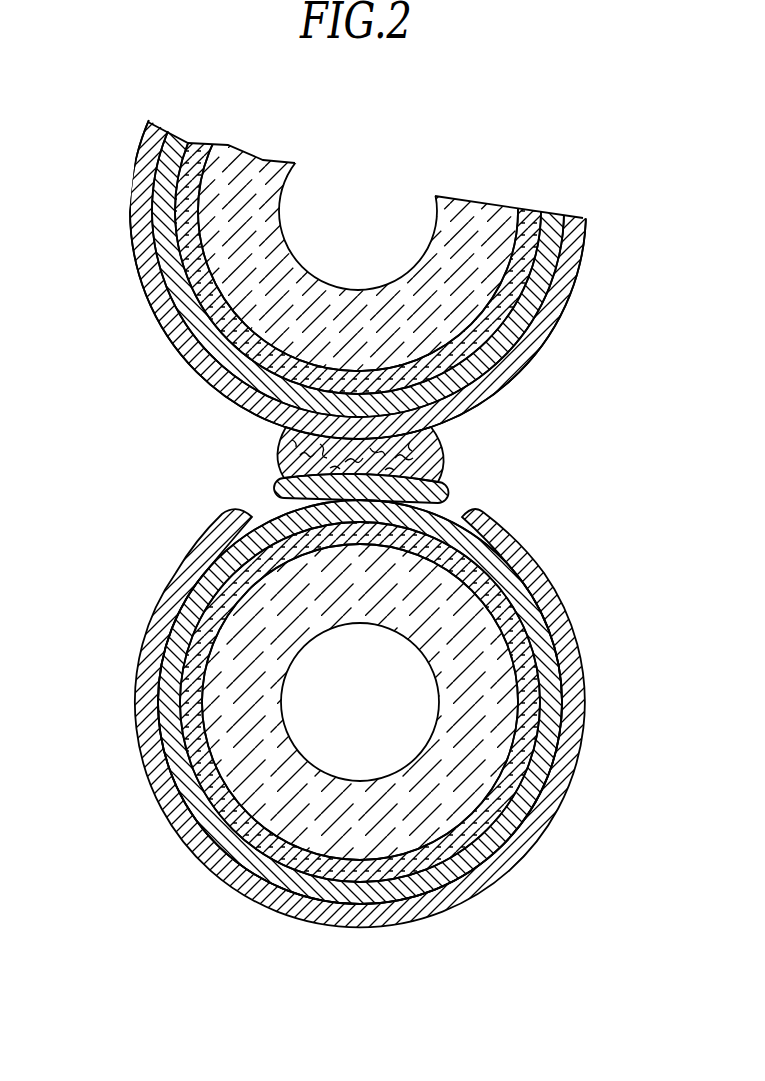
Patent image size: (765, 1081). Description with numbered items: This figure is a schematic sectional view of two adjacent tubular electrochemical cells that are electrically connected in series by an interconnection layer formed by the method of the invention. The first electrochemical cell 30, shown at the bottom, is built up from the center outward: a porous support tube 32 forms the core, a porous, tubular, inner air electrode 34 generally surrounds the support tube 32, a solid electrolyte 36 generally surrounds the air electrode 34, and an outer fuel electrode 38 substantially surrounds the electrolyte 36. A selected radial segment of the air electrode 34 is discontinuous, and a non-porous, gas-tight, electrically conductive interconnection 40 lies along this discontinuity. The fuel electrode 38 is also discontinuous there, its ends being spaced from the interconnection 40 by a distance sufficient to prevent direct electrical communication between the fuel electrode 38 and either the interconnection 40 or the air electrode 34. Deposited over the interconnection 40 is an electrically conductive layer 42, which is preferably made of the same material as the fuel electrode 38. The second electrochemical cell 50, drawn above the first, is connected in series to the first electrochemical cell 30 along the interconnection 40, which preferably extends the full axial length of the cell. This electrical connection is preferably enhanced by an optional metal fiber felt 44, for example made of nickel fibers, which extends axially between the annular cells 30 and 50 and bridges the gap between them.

The electrochemical cell 30 is at (92, 729).
The electrochemical cell 50 is at (92, 238).
The porous support tube 32 is at (488, 213).
The air electrode 34 is at (527, 227).
The solid electrolyte 36 is at (556, 229).
The fuel electrode 38 is at (569, 296).
The interconnection 40 is at (283, 496).
The electrically conductive layer 42 is at (413, 491).
The metal fiber felt 44 is at (296, 452).